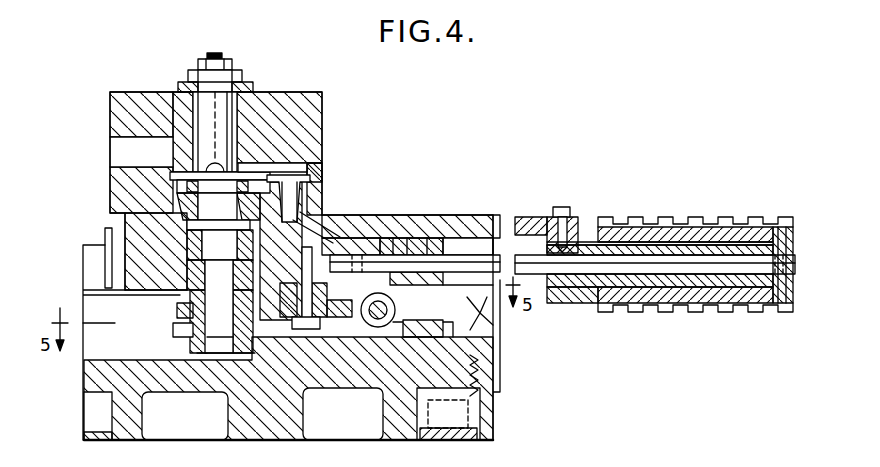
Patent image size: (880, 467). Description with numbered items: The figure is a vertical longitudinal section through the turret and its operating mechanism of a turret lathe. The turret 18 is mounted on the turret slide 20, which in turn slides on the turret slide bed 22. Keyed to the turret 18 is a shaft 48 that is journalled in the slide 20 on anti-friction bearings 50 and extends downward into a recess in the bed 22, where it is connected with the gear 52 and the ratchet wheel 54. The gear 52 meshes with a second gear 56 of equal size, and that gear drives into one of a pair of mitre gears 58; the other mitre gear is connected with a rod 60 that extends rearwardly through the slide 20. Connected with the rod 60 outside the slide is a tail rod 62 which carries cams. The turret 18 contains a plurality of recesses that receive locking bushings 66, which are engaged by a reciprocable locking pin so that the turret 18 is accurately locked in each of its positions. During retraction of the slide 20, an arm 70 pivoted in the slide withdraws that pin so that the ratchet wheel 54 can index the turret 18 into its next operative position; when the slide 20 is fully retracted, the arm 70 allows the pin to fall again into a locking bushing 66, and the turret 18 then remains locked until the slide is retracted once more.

The turret 18 is at (323, 125).
The shaft 48 is at (237, 108).
The locking bushings 66 is at (320, 170).
The anti-friction bearings 50 is at (318, 207).
The turret slide 20 is at (427, 218).
The mitre gears 58 is at (352, 240).
The rod 60 is at (467, 266).
The tail rod 62 is at (673, 232).
The turret slide bed 22 is at (328, 378).
The second gear 56 is at (345, 317).
The gear 52 is at (177, 312).
The ratchet wheel 54 is at (175, 326).
The arm 70 is at (497, 330).